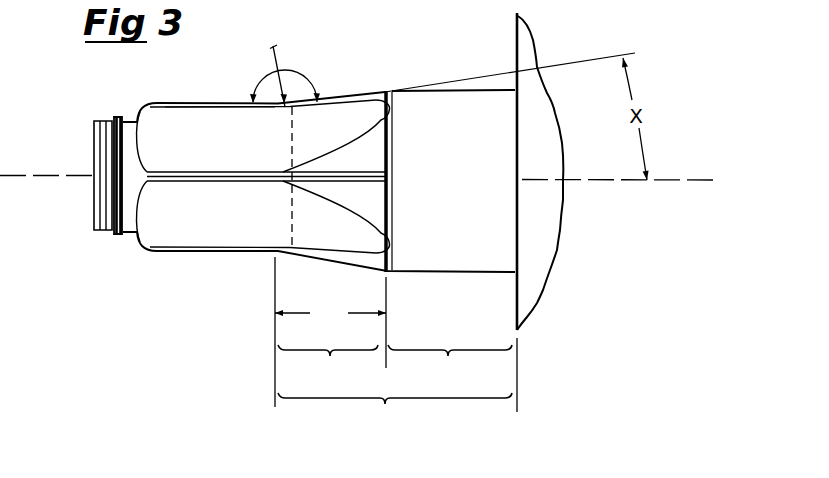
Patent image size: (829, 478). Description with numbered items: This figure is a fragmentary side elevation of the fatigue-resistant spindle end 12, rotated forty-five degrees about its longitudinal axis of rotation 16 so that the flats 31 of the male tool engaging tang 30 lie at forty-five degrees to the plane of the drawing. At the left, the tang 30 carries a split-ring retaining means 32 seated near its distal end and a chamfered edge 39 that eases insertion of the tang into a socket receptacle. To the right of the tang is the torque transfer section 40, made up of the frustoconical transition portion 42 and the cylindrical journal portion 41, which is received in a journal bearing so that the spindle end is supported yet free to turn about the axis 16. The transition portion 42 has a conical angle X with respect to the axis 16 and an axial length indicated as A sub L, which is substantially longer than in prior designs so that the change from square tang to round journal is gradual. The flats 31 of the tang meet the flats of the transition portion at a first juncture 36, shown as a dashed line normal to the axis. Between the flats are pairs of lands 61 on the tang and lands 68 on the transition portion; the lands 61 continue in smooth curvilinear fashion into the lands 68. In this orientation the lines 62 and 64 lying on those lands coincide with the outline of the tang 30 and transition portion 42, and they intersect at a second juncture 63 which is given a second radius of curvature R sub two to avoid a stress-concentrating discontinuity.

The spindle end 12 is at (104, 262).
The longitudinal axis of rotation 16 is at (693, 180).
The male tool engaging tang 30 is at (143, 250).
The flats 31 is at (162, 118).
The retaining means 32 is at (118, 118).
The first juncture 36 is at (297, 134).
The chamfered edge 39 is at (96, 122).
The torque transfer section 40 is at (395, 414).
The cylindrical journal portion 41 is at (452, 375).
The transition portion 42 is at (330, 332).
The lands 61 is at (178, 103).
The lines 62 is at (205, 105).
The second juncture 63 is at (280, 108).
The lines 64 is at (347, 97).
The lands 68 is at (377, 92).